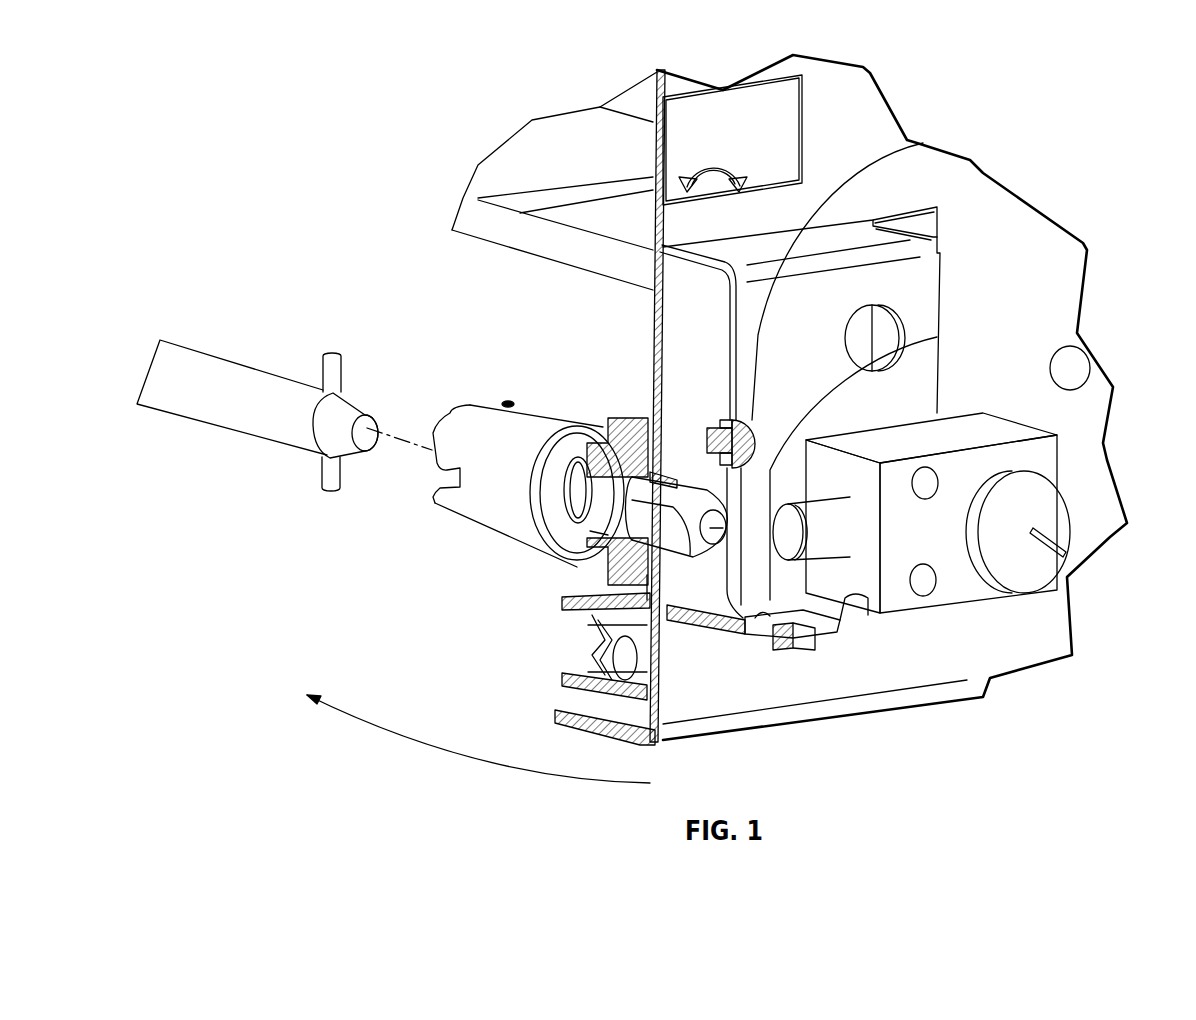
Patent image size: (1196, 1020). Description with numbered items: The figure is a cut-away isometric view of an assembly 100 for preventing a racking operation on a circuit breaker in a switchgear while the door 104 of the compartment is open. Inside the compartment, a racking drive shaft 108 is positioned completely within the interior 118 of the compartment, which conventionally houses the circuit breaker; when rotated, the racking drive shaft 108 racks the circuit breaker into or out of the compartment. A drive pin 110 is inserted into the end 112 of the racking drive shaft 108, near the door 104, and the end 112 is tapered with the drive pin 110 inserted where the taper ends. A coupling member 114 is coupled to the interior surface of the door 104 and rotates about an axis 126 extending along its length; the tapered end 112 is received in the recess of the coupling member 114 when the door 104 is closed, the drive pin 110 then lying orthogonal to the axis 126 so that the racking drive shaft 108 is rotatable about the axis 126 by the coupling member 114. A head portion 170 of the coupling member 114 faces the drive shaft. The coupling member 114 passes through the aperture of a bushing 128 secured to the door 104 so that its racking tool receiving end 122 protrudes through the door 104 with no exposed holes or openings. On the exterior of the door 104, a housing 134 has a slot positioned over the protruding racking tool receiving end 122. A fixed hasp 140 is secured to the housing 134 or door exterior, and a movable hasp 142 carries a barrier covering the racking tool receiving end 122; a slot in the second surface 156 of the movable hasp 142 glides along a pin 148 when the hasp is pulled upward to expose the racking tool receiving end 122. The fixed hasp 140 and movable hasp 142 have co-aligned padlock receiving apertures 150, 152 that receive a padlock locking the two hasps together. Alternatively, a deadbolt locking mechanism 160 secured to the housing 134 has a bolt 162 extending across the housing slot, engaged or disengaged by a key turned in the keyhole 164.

The assembly 100 is at (263, 662).
The door 104 is at (865, 100).
The racking drive shaft 108 is at (180, 360).
The drive pin 110 is at (332, 363).
The end of the racking drive shaft 112 is at (367, 380).
The coupling member 114 is at (443, 542).
The interior of the compartment 118 is at (558, 325).
The racking tool receiving end 122 is at (700, 562).
The axis 126 is at (403, 437).
The bushing 128 is at (620, 560).
The housing 134 is at (850, 236).
The fixed hasp 140 is at (807, 647).
The movable hasp 142 is at (850, 596).
The pin 148 is at (920, 148).
The padlock receiving aperture 150 is at (760, 650).
The padlock receiving aperture 152 is at (775, 615).
The second surface 156 is at (847, 375).
The deadbolt locking mechanism 160 is at (1075, 440).
The bolt 162 is at (830, 527).
The keyhole 164 is at (1043, 530).
The head portion 170 is at (546, 428).